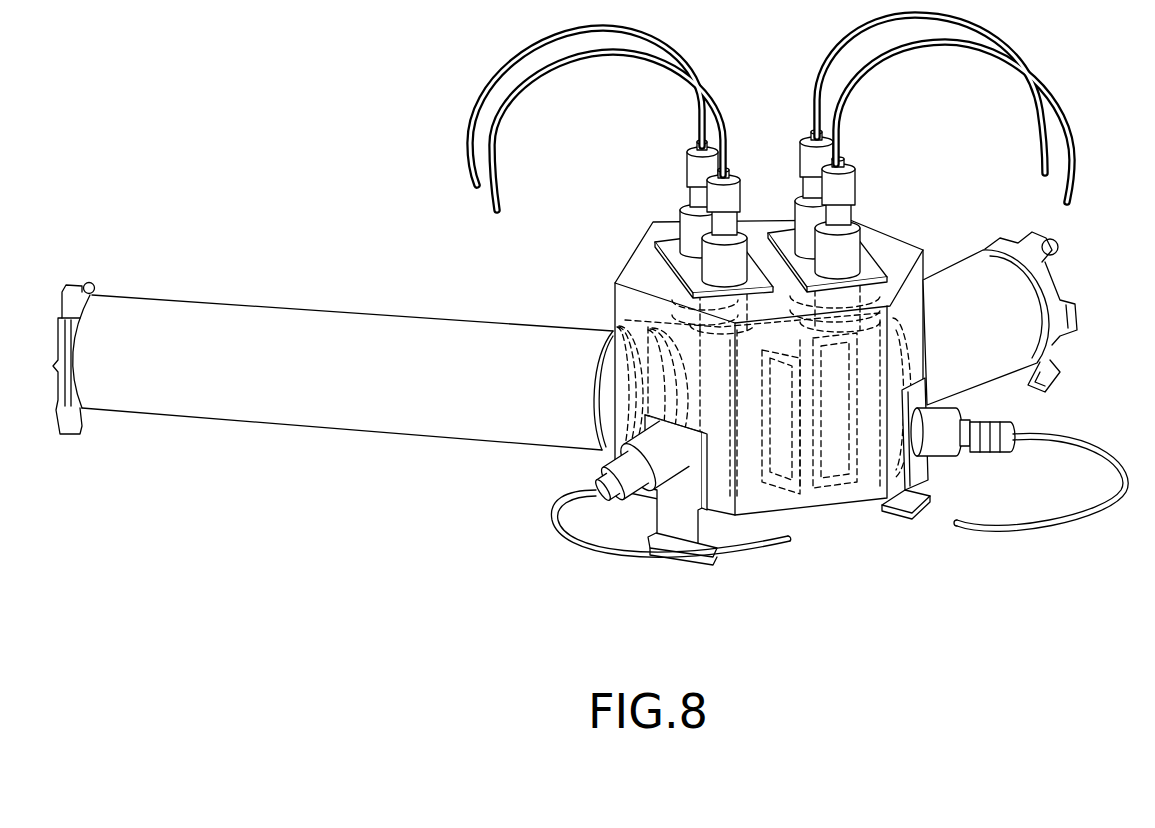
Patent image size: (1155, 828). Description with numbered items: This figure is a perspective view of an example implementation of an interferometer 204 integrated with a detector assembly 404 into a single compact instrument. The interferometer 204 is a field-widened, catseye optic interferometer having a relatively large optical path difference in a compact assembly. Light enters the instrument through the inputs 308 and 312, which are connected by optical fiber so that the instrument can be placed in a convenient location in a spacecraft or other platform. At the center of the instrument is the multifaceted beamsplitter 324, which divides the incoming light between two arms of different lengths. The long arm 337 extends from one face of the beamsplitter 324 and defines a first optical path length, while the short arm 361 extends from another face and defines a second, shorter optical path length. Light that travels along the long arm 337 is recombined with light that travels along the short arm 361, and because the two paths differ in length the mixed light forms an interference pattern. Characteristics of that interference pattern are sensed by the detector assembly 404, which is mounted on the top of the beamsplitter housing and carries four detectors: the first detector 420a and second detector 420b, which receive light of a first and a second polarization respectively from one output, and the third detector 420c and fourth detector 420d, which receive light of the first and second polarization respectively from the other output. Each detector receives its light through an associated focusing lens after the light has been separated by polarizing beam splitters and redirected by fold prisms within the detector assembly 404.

The interferometer 204 is at (530, 290).
The input 308 is at (997, 447).
The input 312 is at (600, 468).
The beamsplitter 324 is at (780, 442).
The long arm 337 is at (302, 317).
The short arm 361 is at (1003, 367).
The detector assembly 404 is at (890, 172).
The first detector 420a is at (847, 248).
The second detector 420b is at (700, 222).
The third detector 420c is at (717, 258).
The fourth detector 420d is at (803, 213).